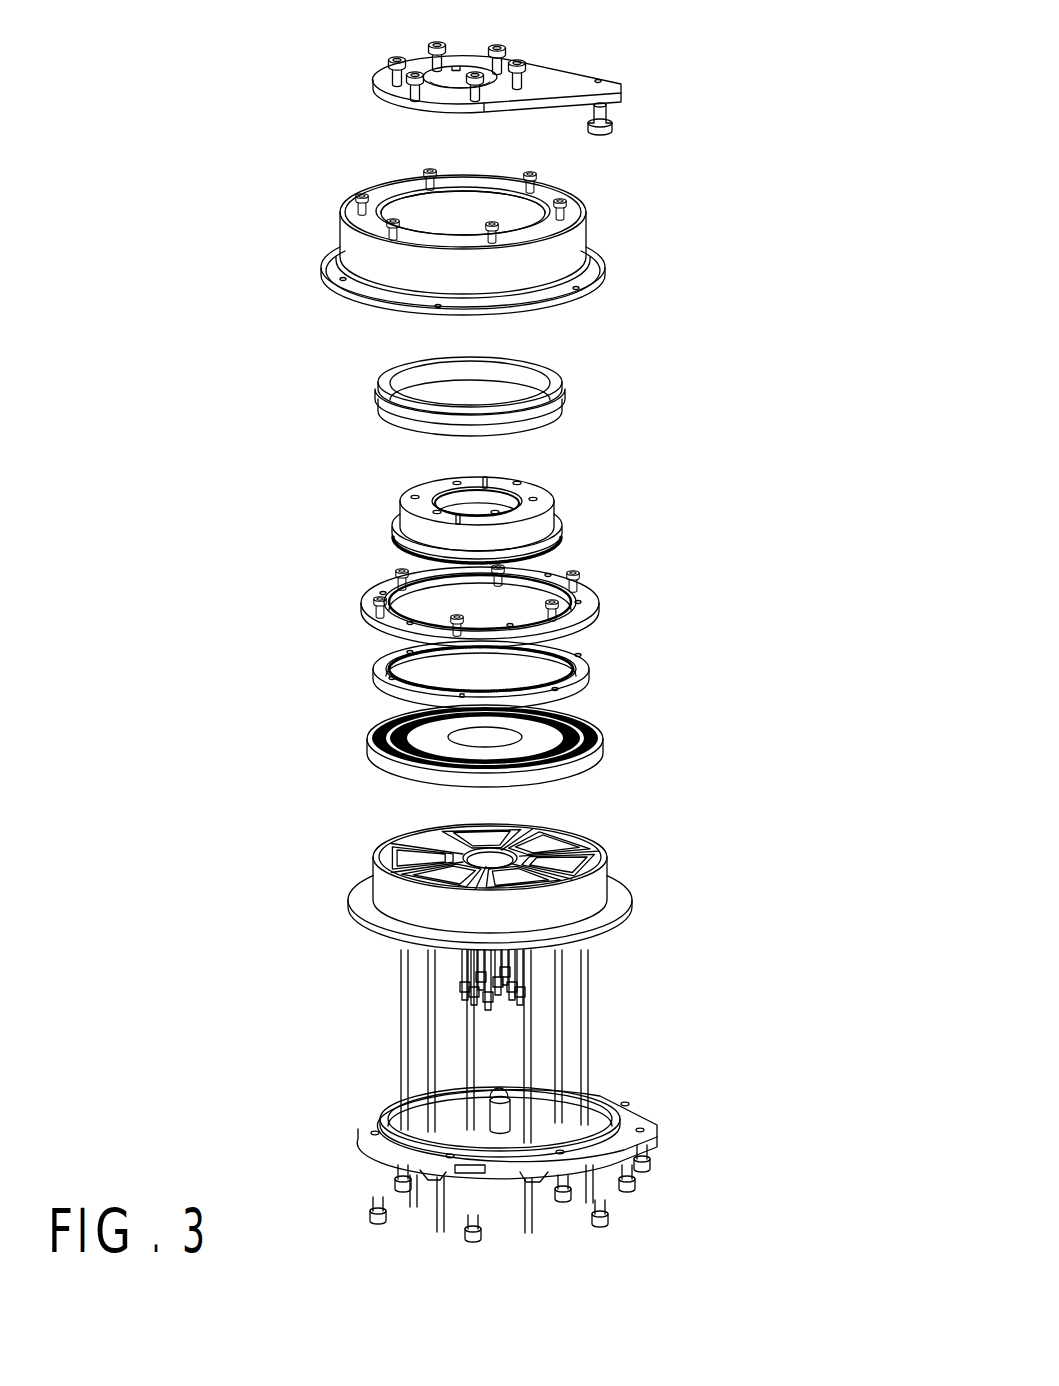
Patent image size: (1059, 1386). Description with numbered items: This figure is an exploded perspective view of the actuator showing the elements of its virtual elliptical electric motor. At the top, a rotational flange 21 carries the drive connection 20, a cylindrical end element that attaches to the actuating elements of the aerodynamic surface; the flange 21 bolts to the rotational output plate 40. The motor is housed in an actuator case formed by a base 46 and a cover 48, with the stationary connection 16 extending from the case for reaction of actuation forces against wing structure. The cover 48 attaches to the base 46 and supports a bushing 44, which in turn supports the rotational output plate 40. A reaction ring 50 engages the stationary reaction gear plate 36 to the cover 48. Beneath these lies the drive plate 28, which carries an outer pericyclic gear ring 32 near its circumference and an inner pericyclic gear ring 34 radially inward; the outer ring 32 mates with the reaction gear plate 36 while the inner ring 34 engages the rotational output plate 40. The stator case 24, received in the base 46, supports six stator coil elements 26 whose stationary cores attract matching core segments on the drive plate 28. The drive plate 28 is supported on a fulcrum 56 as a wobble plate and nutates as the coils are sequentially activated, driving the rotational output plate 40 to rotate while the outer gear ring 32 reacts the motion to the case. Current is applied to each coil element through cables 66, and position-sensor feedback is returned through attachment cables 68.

The rotational flange 21 is at (546, 60).
The drive connection 20 is at (612, 112).
The cover 48 is at (589, 232).
The bushing 44 is at (560, 396).
The rotational output plate 40 is at (552, 508).
The reaction ring 50 is at (589, 598).
The reaction gear plate 36 is at (586, 668).
The outer pericyclic gear ring 32 is at (586, 716).
The inner pericyclic gear ring 34 is at (400, 737).
The drive plate 28 is at (502, 723).
The stator coil elements 26 is at (577, 855).
The stator case 24 is at (542, 866).
The cables 66 is at (590, 1010).
The attachment cables 68 is at (500, 995).
The fulcrum 56 is at (503, 1103).
The base 46 is at (612, 1096).
The stationary connection 16 is at (654, 1157).